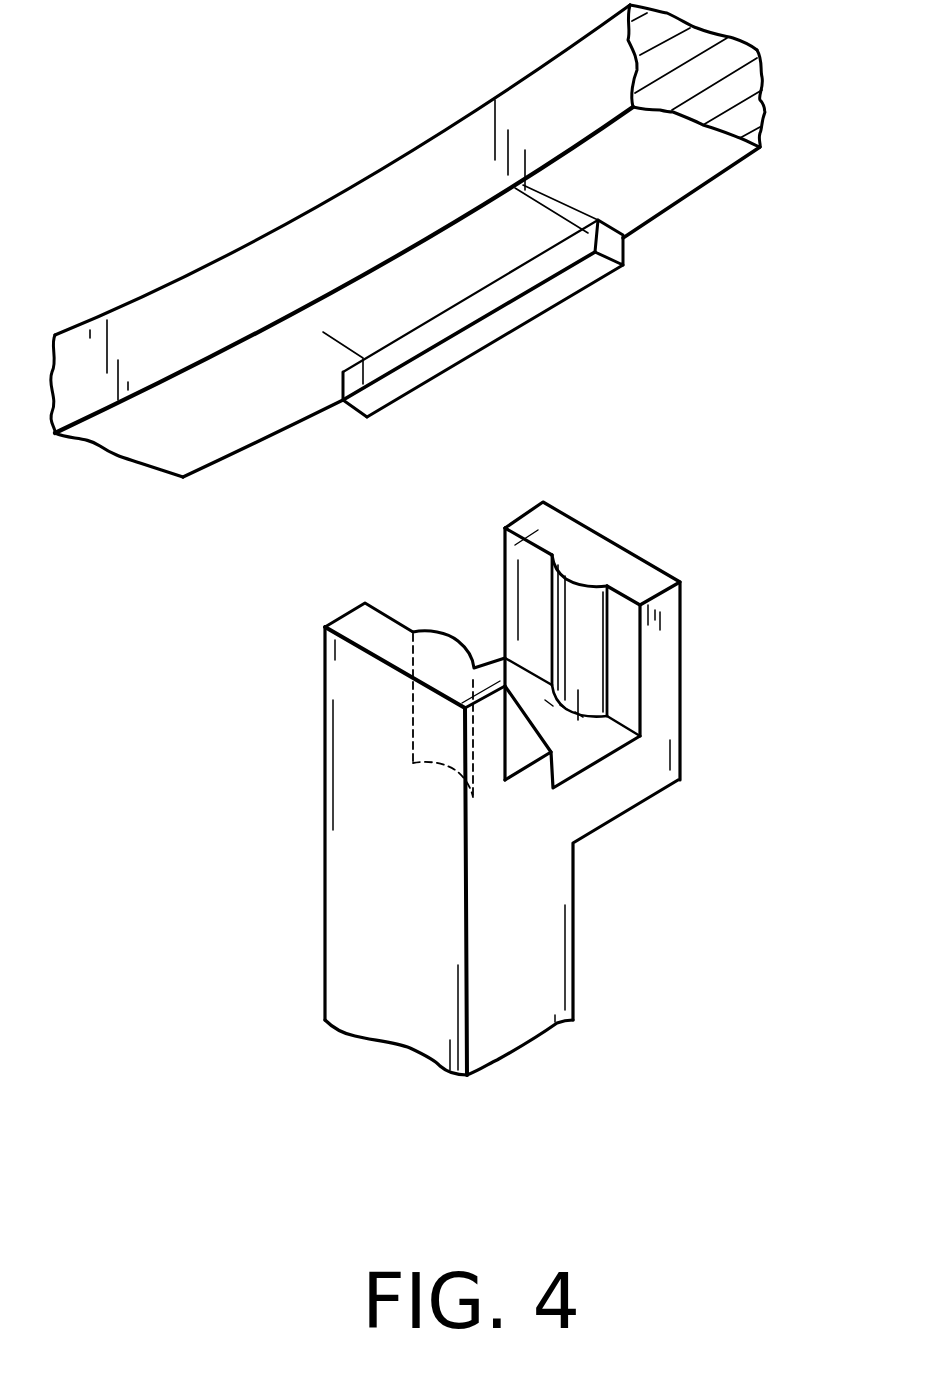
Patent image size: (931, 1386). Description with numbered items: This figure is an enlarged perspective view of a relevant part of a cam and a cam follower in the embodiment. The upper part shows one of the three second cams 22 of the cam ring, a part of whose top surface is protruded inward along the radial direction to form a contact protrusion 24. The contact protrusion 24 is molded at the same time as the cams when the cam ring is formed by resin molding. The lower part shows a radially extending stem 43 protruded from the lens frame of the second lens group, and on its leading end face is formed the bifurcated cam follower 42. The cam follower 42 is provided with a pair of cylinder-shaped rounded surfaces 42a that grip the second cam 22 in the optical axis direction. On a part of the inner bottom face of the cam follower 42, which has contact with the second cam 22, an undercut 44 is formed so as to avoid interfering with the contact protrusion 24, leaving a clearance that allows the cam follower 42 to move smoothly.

The second cam 22 is at (675, 163).
The contact protrusion 24 is at (537, 305).
The cam follower 42 is at (685, 668).
The cylinder-shaped rounded surfaces 42a is at (557, 610).
The stem 43 is at (515, 1018).
The undercut 44 is at (580, 758).